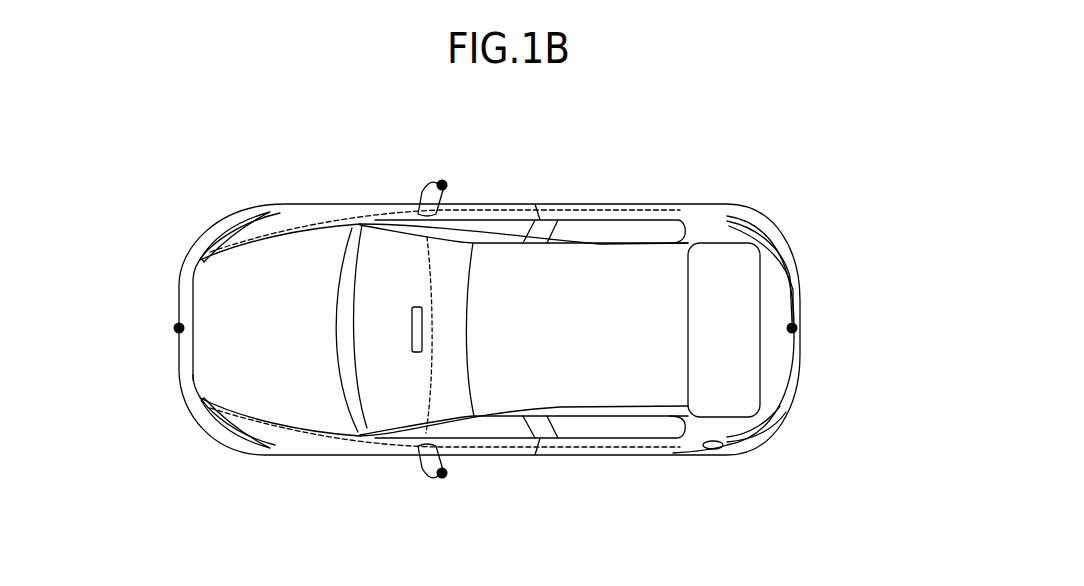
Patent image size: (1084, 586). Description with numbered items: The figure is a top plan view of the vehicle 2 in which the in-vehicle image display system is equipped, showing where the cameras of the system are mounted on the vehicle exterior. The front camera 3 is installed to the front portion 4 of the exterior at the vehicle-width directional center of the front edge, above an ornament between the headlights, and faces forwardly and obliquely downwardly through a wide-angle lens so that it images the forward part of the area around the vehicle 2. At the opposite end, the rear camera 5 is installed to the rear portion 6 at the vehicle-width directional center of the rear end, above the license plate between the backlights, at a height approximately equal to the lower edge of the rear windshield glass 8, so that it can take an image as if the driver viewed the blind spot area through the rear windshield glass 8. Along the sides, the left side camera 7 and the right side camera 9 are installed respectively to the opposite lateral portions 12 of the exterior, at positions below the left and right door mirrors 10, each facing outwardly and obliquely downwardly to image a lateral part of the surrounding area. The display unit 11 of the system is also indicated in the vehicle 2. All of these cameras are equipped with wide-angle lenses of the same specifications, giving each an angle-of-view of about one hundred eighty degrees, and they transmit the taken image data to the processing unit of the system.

The vehicle 2 is at (698, 186).
The front camera 3 is at (173, 328).
The front portion 4 is at (280, 231).
The rear camera 5 is at (798, 325).
The rear portion 6 is at (783, 264).
The left side camera 7 is at (445, 480).
The rear windshield glass 8 is at (763, 290).
The right side camera 9 is at (441, 180).
The door mirrors 10 is at (425, 199).
The display unit 11 is at (416, 334).
The lateral portions 12 is at (484, 214).